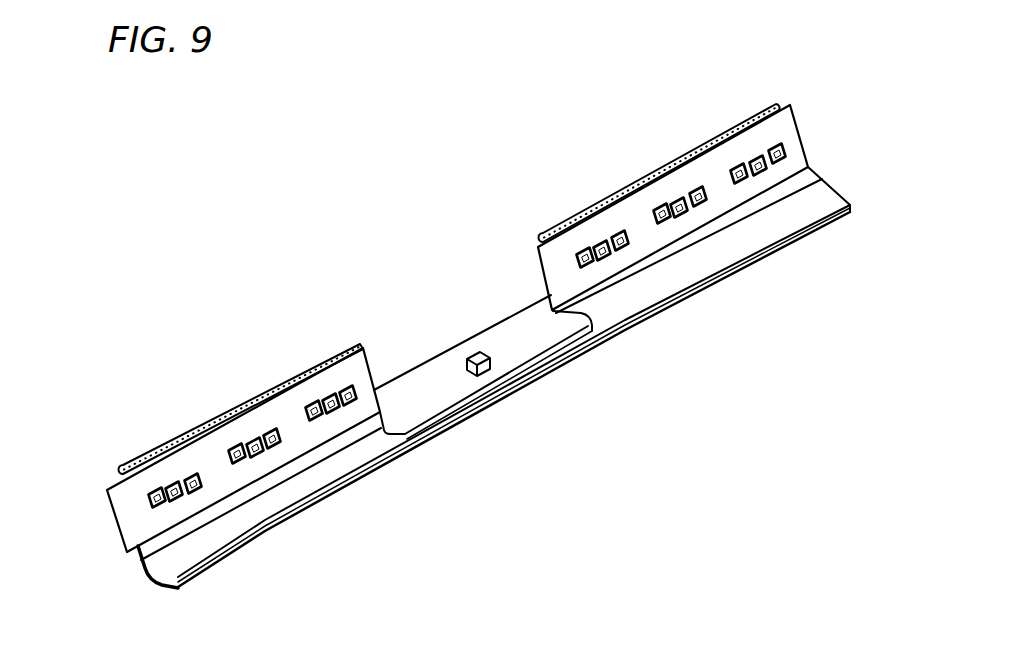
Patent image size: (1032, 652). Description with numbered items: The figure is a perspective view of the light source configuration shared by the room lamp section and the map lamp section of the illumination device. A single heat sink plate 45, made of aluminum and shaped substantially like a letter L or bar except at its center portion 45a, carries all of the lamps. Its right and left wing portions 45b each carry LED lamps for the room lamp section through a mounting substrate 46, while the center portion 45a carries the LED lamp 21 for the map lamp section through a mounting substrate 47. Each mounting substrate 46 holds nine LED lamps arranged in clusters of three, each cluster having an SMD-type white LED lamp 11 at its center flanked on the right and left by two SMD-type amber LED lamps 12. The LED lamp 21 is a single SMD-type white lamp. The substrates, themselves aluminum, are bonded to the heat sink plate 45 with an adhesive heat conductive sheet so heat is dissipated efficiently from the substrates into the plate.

The white LED lamp 11 is at (156, 488).
The amber LED lamp 12 is at (128, 476).
The LED lamp 21 is at (475, 352).
The heat sink plate 45 is at (485, 338).
The center portion 45a is at (510, 399).
The wing portion 45b is at (243, 403).
The mounting substrate 46 is at (117, 528).
The mounting substrate 47 is at (439, 408).